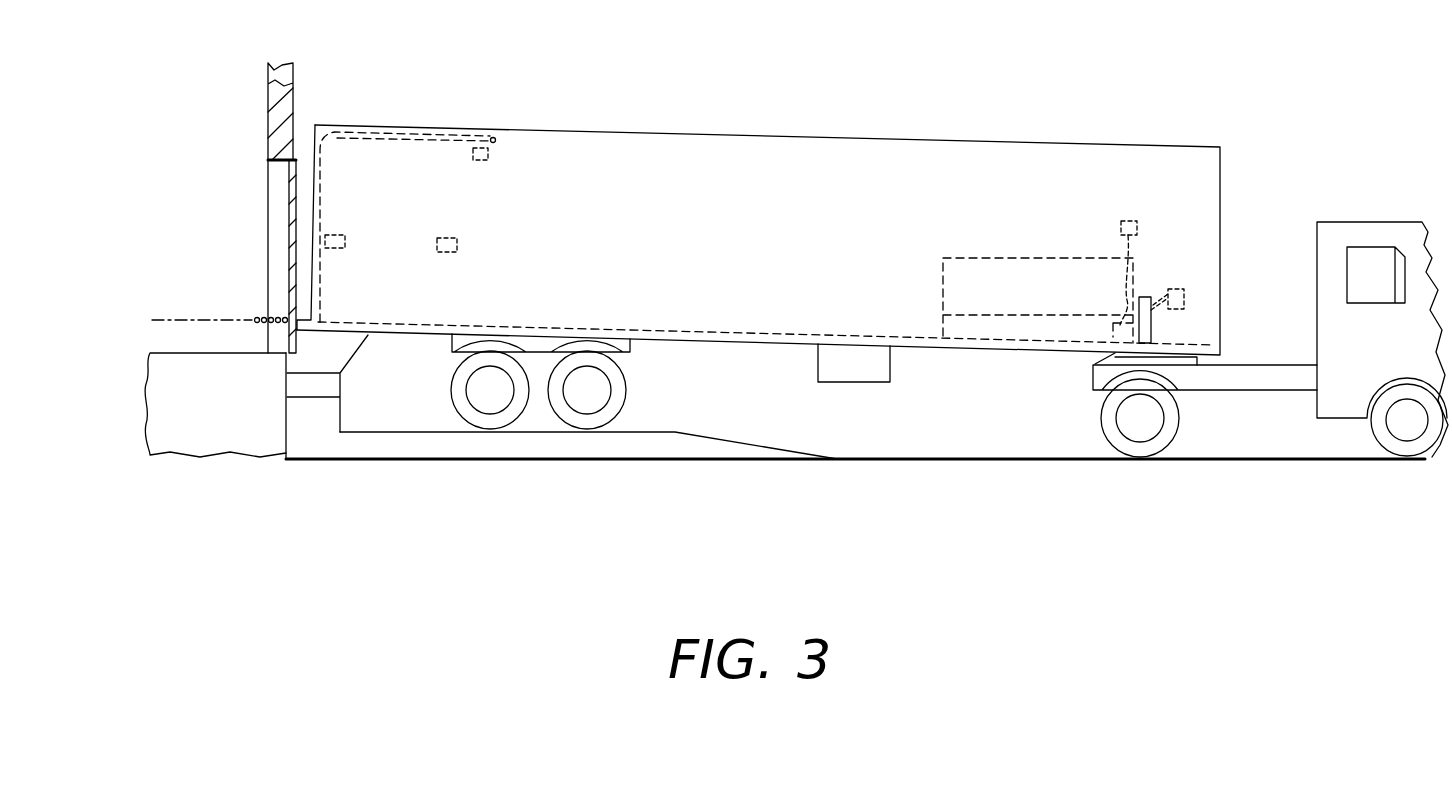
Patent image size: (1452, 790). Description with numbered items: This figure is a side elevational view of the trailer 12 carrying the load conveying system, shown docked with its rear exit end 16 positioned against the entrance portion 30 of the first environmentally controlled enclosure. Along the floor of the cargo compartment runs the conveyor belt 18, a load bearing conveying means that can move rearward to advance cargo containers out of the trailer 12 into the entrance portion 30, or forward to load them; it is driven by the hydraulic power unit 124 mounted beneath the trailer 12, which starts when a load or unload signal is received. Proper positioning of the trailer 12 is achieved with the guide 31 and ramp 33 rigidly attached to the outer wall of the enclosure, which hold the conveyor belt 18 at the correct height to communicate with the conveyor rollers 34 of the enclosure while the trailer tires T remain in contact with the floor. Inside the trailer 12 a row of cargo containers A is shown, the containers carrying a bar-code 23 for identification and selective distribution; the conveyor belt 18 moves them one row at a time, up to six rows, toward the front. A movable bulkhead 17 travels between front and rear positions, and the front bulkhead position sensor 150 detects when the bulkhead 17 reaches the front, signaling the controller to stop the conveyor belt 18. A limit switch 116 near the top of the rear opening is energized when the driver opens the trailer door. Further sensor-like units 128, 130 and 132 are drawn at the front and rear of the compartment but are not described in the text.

The trailer 12 is at (1102, 143).
The rear exit end 16 is at (313, 193).
The bulkhead 17 is at (1150, 297).
The conveyor belt 18 is at (885, 333).
The bar-code 23 is at (1079, 282).
The entrance portion 30 is at (277, 212).
The guide 31 is at (343, 382).
The ramp 33 is at (783, 448).
The conveyor rollers 34 is at (183, 320).
The limit switch 116 is at (492, 155).
The hydraulic power unit 124 is at (890, 360).
The sensor 128 is at (458, 238).
The sensor 130 is at (338, 235).
The sensor 132 is at (1137, 223).
The front bulkhead position sensor 150 is at (1186, 294).
The row of cargo containers A is at (1076, 251).
The trailer tires T is at (627, 380).